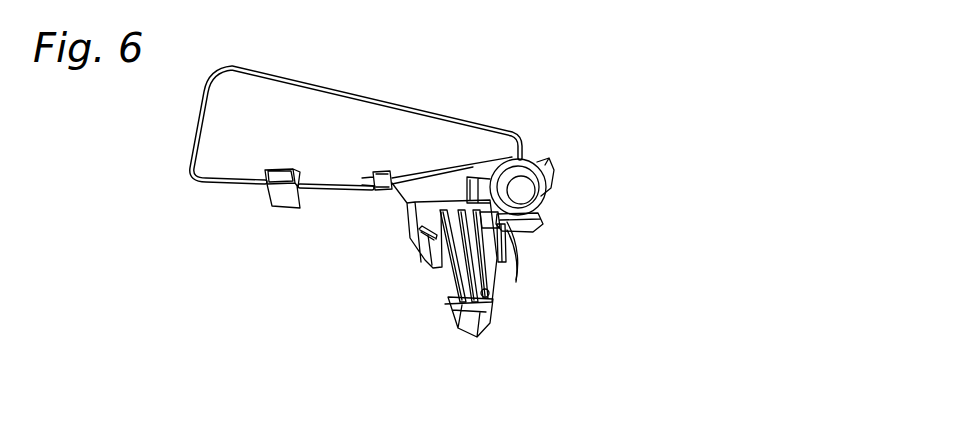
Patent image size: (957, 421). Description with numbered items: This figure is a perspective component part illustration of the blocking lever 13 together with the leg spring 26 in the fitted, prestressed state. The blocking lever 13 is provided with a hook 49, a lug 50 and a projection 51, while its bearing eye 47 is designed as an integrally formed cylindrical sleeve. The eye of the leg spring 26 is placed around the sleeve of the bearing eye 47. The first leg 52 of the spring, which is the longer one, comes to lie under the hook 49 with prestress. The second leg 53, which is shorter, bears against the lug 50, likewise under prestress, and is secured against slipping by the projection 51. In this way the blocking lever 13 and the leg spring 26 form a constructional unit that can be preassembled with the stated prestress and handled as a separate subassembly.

The blocking lever 13 is at (323, 83).
The first leg 52 is at (430, 173).
The leg spring 26 is at (528, 158).
The bearing eye 47 is at (522, 188).
The lug 50 is at (538, 228).
The projection 51 is at (507, 241).
The second leg 53 is at (508, 235).
The hook 49 is at (380, 192).